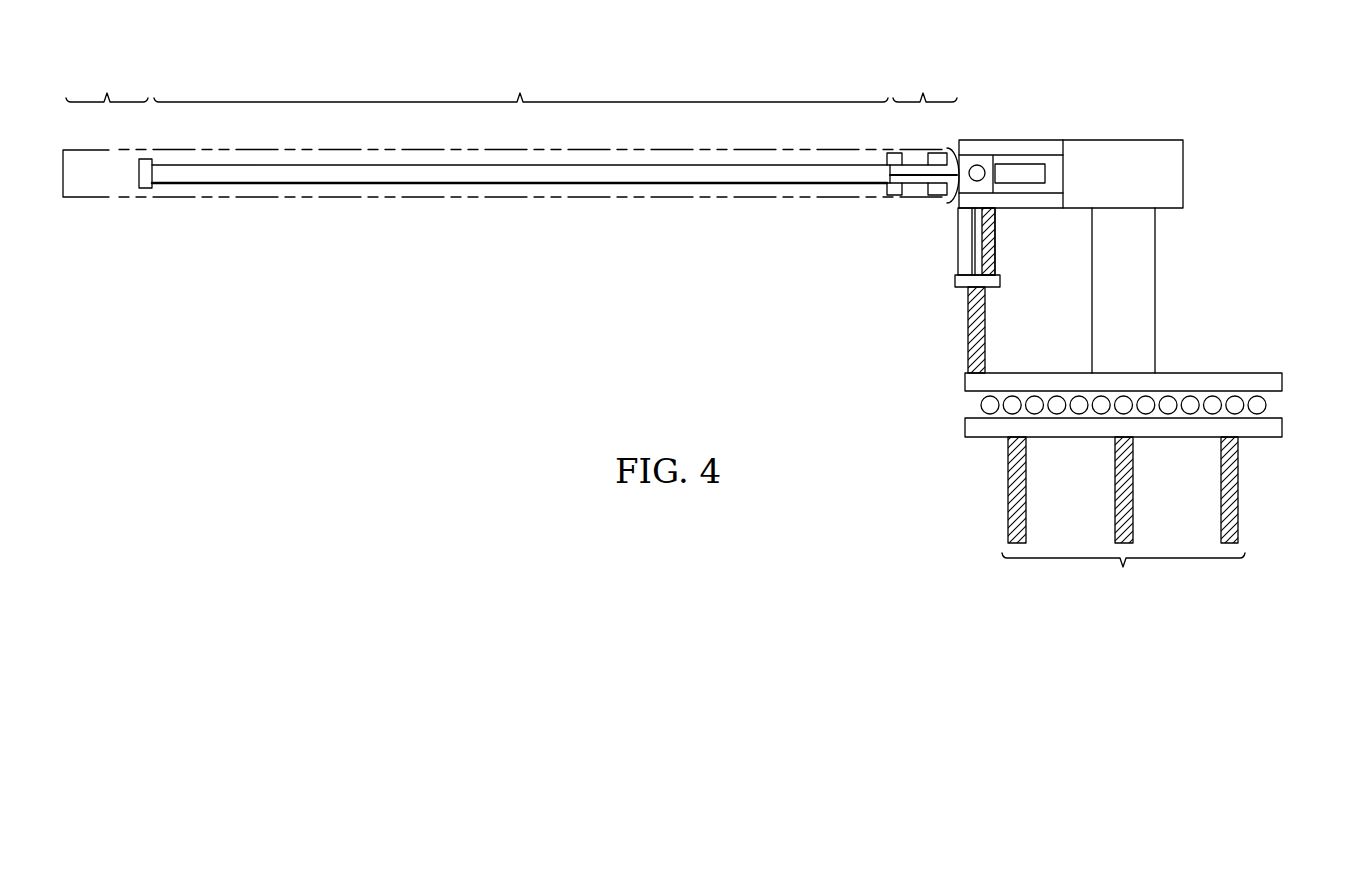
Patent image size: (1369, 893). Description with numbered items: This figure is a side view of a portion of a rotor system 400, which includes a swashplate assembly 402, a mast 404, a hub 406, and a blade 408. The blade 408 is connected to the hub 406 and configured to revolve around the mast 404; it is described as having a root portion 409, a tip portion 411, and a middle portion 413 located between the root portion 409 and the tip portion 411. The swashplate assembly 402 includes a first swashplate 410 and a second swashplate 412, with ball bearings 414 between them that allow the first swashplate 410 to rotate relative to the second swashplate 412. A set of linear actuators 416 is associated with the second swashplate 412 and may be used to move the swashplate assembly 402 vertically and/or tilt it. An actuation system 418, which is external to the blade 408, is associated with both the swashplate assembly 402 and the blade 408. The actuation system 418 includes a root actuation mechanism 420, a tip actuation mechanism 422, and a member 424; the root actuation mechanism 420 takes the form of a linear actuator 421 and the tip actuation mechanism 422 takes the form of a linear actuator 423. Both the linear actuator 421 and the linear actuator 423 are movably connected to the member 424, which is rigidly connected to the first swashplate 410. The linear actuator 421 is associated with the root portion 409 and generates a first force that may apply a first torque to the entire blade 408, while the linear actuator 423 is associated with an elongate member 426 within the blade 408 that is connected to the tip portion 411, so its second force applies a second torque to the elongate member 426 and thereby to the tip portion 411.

The rotor system 400 is at (1134, 96).
The swashplate assembly 402 is at (1259, 357).
The mast 404 is at (1157, 292).
The hub 406 is at (1185, 174).
The blade 408 is at (95, 198).
The root portion 409 is at (925, 83).
The first swashplate 410 is at (1283, 383).
The tip portion 411 is at (107, 82).
The second swashplate 412 is at (964, 428).
The middle portion 413 is at (521, 83).
The ball bearings 414 is at (1292, 406).
The set of linear actuators 416 is at (1123, 518).
The actuation system 418 is at (920, 305).
The root actuation mechanism 420 is at (940, 263).
The linear actuator 421 is at (958, 234).
The tip actuation mechanism 422 is at (1010, 262).
The linear actuator 423 is at (996, 244).
The member 424 is at (967, 343).
The elongate member 426 is at (300, 185).